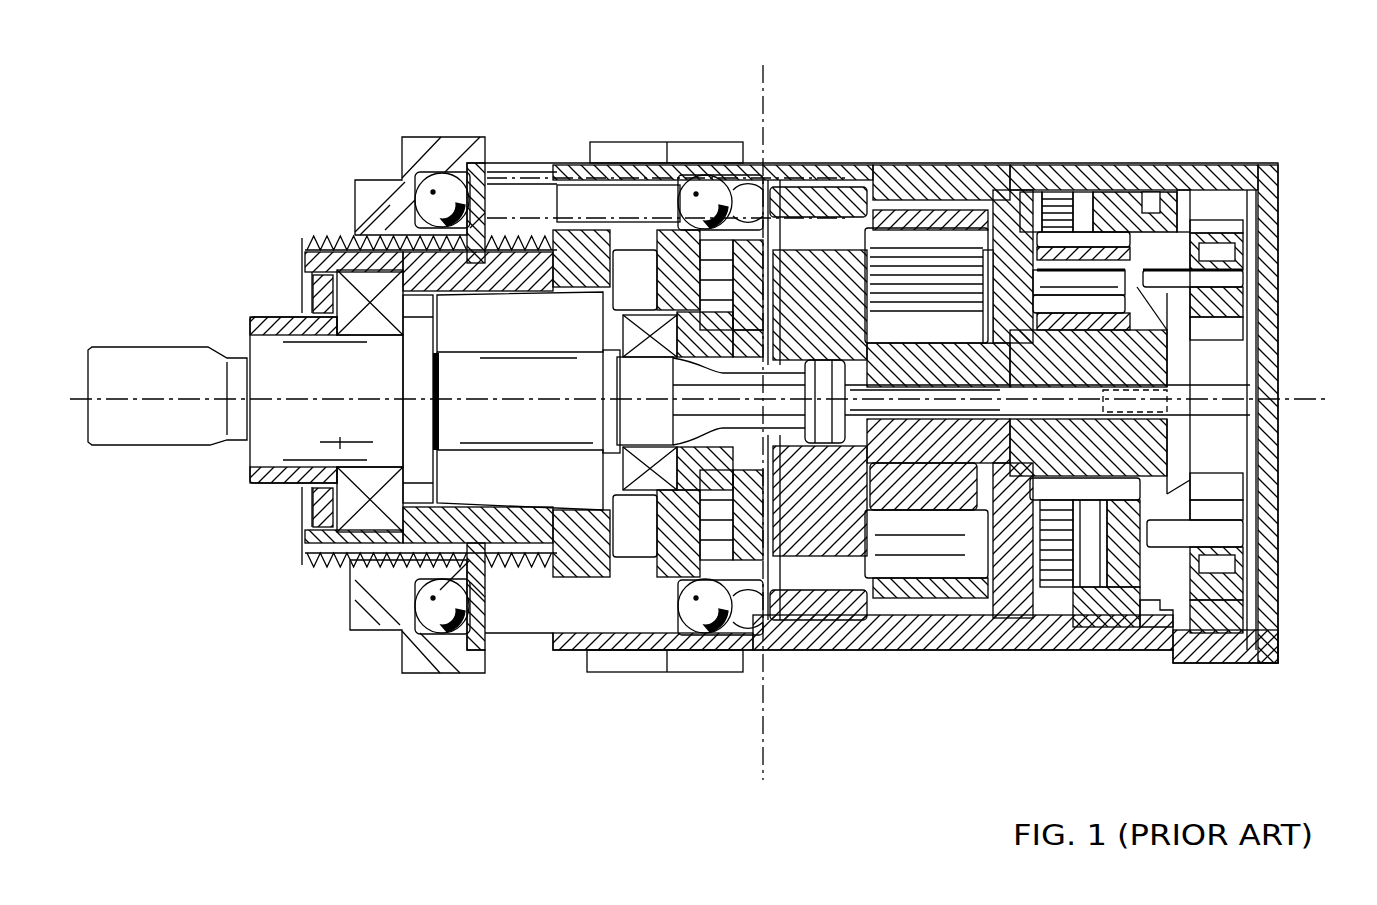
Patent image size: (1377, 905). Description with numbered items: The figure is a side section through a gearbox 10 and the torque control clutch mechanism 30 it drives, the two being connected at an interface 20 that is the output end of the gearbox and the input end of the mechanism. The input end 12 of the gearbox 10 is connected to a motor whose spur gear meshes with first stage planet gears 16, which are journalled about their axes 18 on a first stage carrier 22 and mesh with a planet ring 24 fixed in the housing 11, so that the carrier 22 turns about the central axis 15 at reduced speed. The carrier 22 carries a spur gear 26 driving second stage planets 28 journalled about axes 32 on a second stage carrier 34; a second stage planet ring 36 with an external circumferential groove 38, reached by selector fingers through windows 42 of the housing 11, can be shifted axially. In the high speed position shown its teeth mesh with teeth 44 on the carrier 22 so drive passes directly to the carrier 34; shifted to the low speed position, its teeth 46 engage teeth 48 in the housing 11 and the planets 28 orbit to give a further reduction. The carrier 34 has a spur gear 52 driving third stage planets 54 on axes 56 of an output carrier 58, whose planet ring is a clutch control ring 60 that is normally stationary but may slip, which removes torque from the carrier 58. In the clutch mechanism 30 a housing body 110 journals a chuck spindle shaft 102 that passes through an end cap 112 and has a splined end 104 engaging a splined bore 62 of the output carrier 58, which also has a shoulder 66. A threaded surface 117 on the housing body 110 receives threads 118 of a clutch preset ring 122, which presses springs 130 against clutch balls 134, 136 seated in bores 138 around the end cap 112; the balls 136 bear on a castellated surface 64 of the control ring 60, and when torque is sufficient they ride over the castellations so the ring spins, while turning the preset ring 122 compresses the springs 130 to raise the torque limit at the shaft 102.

The gearbox 10 is at (1086, 100).
The housing 11 is at (1228, 165).
The input end 12 is at (1274, 652).
The central axis 15 is at (1292, 410).
The first stage planet gears 16 is at (1221, 330).
The axes 18 is at (1201, 282).
The interface 20 is at (763, 750).
The first stage carrier 22 is at (1147, 350).
The planet ring 24 is at (1225, 197).
The spur gear 26 is at (1113, 485).
The second stage planets 28 is at (1103, 247).
The torque control clutch mechanism 30 is at (505, 103).
The axes 32 is at (1015, 380).
The second stage carrier 34 is at (957, 293).
The second stage planet ring 36 is at (1162, 618).
The external circumferential groove 38 is at (1155, 200).
The windows 42 is at (1170, 393).
The teeth 44 is at (1195, 590).
The teeth 46 is at (1100, 560).
The teeth 48 is at (1045, 570).
The spur gear 52 is at (968, 470).
The third stage planets 54 is at (935, 550).
The axes 56 is at (905, 525).
The output carrier 58 is at (808, 287).
The clutch control ring 60 is at (863, 180).
The splined bore 62 is at (607, 645).
The castellated surface 64 is at (755, 650).
The shoulder 66 is at (714, 300).
The chuck spindle shaft 102 is at (165, 430).
The splined end 104 is at (767, 392).
The housing body 110 is at (567, 140).
The end cap 112 is at (652, 140).
The threaded surface 117 is at (323, 556).
The threads 118 is at (357, 557).
The clutch preset ring 122 is at (430, 660).
The springs 130 is at (530, 643).
The clutch balls 134 is at (688, 618).
The clutch balls 136 is at (745, 630).
The bores 138 is at (700, 640).